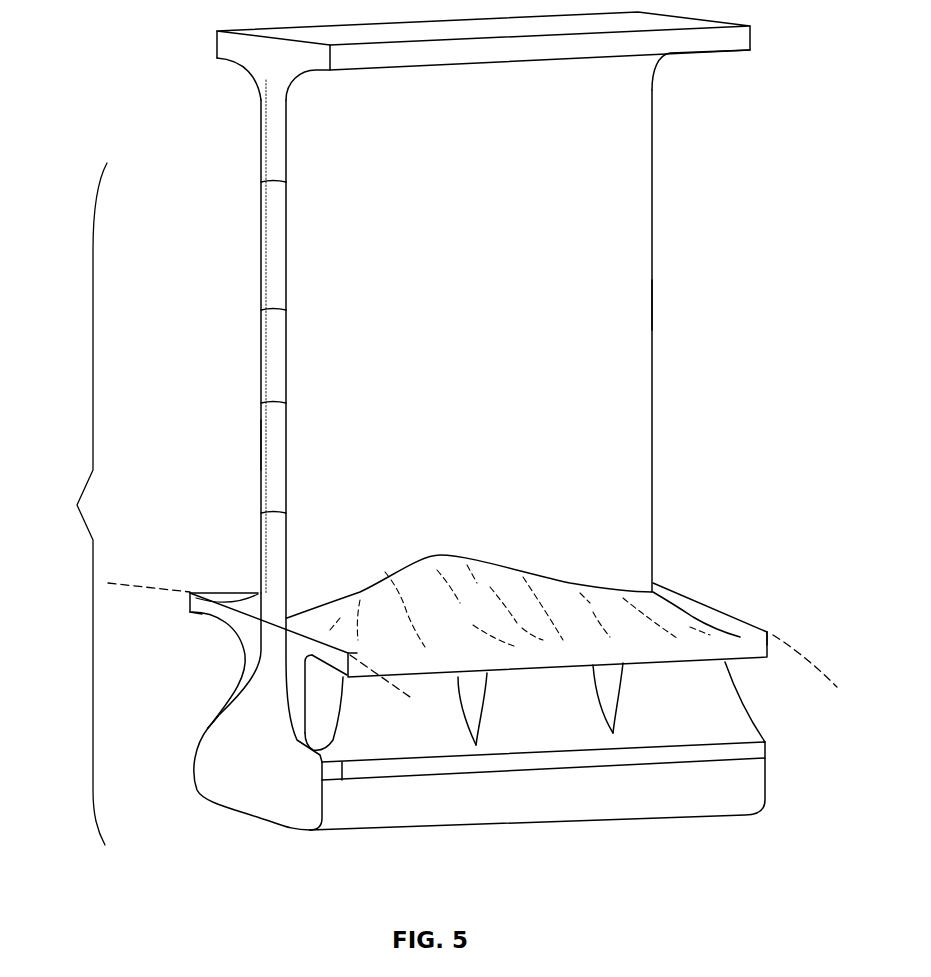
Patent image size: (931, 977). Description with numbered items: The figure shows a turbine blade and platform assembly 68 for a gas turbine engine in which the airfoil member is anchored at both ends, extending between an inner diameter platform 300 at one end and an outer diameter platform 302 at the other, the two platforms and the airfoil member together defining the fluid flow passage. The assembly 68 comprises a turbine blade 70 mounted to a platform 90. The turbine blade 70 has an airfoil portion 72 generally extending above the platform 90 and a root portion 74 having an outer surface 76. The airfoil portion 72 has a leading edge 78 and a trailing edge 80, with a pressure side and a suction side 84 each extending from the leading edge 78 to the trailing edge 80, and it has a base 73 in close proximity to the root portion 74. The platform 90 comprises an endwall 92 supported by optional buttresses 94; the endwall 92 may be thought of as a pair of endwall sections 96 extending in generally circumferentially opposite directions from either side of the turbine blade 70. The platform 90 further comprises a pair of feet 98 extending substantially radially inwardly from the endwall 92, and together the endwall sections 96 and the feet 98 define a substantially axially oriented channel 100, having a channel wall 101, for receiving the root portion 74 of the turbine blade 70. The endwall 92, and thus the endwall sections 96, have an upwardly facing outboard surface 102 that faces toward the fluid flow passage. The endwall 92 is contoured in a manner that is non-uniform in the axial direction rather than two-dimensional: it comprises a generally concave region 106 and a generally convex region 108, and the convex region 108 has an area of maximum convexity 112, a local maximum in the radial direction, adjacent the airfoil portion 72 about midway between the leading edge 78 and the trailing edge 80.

The turbine blade and platform assembly 68 is at (77, 504).
The turbine blade 70 is at (203, 246).
The airfoil portion 72 is at (313, 422).
The base 73 is at (638, 592).
The root portion 74 is at (228, 780).
The outer surface 76 is at (343, 757).
The leading edge 78 is at (273, 366).
The trailing edge 80 is at (655, 375).
The suction side 84 is at (604, 326).
The platform 90 is at (207, 705).
The endwall 92 is at (190, 605).
The buttresses 94 is at (478, 690).
The endwall sections 96 is at (225, 593).
The feet 98 is at (245, 638).
The channel 100 is at (270, 660).
The channel wall 101 is at (297, 723).
The outboard surface 102 is at (670, 585).
The concave region 106 is at (468, 620).
The convex region 108 is at (427, 590).
The area of maximum convexity 112 is at (444, 555).
The inner diameter platform 300 is at (767, 630).
The outer diameter platform 302 is at (243, 54).